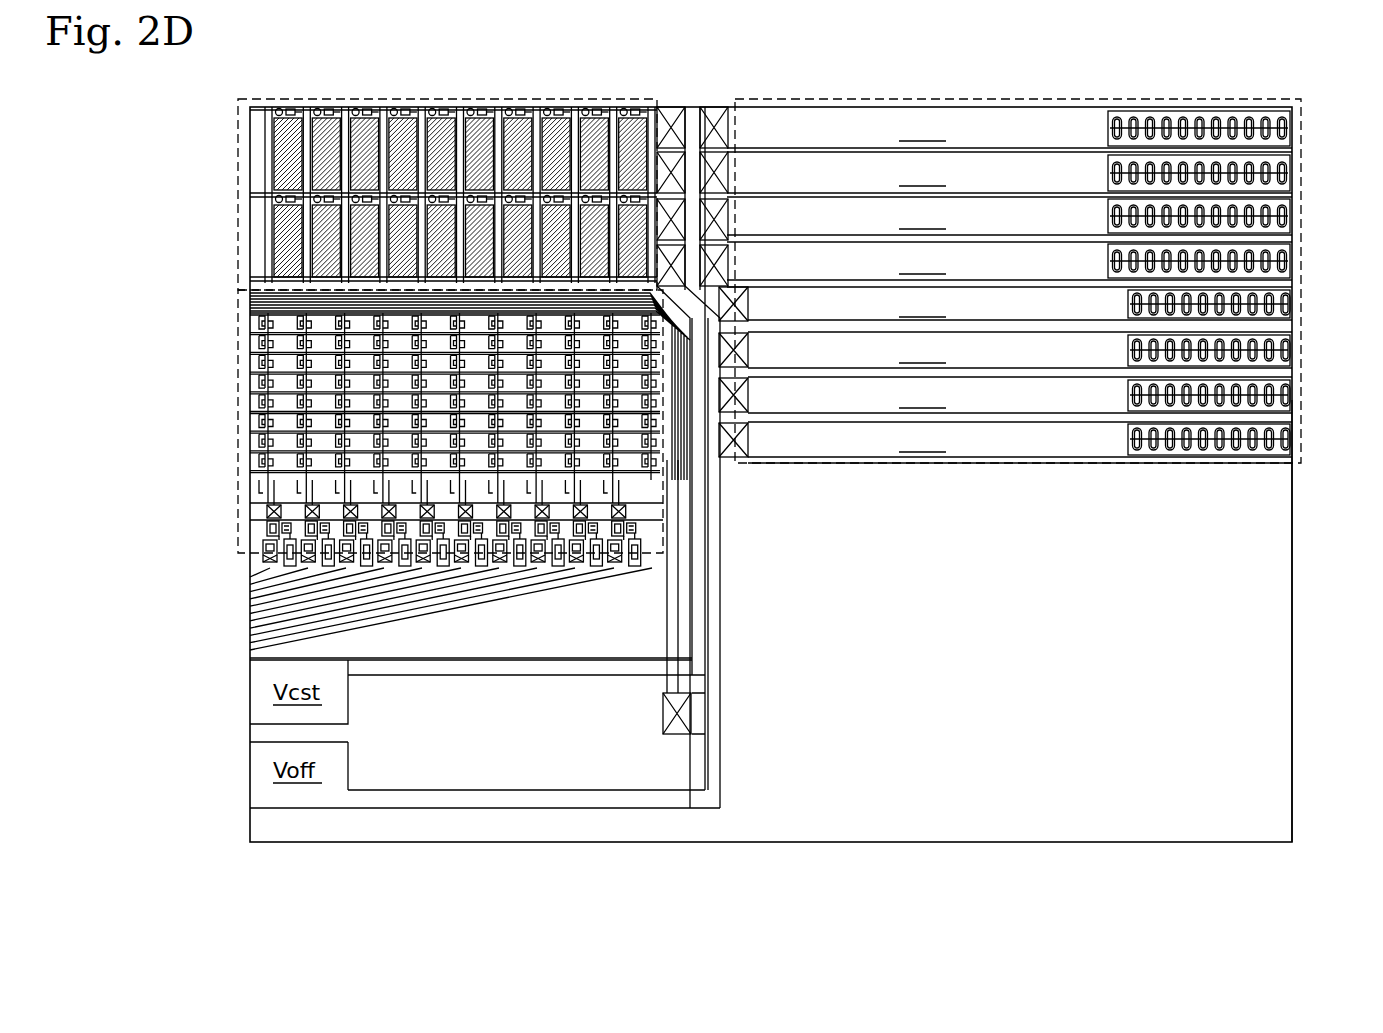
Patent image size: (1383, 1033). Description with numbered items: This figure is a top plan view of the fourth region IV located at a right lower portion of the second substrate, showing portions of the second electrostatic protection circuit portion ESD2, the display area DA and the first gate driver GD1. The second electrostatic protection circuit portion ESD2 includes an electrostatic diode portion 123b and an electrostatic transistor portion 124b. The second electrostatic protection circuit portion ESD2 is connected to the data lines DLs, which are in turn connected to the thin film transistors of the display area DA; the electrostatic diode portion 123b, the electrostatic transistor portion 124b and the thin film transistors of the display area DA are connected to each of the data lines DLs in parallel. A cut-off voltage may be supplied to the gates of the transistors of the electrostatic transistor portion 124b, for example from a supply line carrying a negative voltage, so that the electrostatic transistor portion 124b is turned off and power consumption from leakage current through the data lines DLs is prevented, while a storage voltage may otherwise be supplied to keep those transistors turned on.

The display area DA is at (238, 157).
The first gate driver GD1 is at (1302, 250).
The electrostatic transistor portion 124b is at (230, 313).
The second electrostatic protection circuit portion ESD2 is at (238, 496).
The electrostatic diode portion 123b is at (230, 503).
The data lines DLs is at (230, 572).
The fourth region IV is at (1302, 638).